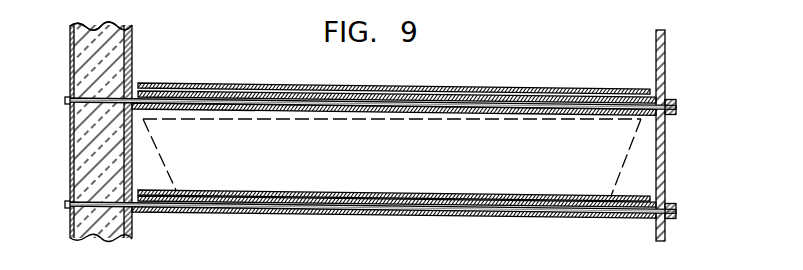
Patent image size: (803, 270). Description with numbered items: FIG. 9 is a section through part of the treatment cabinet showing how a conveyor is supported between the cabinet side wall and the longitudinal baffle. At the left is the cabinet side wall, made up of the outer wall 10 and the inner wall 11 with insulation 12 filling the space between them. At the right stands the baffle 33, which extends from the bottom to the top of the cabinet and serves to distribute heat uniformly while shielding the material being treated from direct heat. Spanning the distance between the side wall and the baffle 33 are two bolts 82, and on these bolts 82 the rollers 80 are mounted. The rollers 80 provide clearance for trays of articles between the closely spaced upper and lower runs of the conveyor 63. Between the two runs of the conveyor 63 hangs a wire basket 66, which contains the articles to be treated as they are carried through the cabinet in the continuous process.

The outer wall 10 is at (68, 51).
The inner wall 11 is at (132, 51).
The insulation 12 is at (97, 33).
The baffle 33 is at (666, 139).
The conveyors 63 is at (392, 86).
The rollers 80 is at (262, 109).
The bolts 82 is at (68, 104).
The wire basket 66 is at (603, 168).